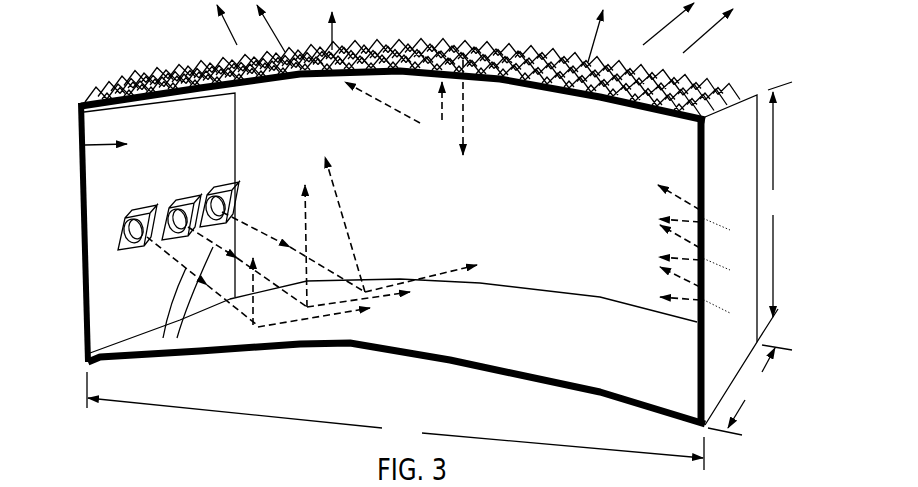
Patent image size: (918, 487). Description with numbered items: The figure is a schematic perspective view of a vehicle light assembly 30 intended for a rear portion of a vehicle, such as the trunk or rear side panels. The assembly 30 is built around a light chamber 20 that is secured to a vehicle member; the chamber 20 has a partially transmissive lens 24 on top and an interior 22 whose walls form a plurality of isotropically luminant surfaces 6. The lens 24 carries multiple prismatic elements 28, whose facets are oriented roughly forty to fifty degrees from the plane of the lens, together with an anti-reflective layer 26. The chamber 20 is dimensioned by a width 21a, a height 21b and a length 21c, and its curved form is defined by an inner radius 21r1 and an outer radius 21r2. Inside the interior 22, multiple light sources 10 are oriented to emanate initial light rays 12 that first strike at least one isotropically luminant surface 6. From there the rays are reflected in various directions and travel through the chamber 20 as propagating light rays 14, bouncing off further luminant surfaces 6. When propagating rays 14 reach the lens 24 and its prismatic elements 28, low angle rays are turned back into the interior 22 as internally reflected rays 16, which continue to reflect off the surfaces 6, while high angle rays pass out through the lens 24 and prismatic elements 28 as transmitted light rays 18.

The isotropically luminant surface 6 is at (103, 287).
The light source 10 is at (130, 212).
The initial light ray 12 is at (163, 338).
The propagating light ray 14 is at (441, 105).
The internally reflected ray 16 is at (463, 112).
The transmitted light ray 18 is at (232, 37).
The light chamber 20 is at (802, 270).
The width 21a is at (750, 390).
The height 21b is at (774, 212).
The length 21c is at (395, 421).
The inner radius 21r1 is at (377, 377).
The outer radius 21r2 is at (435, 27).
The interior 22 is at (82, 152).
The partially transmissive lens 24 is at (70, 95).
The anti-reflective layer 26 is at (110, 112).
The prismatic element 28 is at (85, 96).
The vehicle light assembly 30 is at (118, 50).